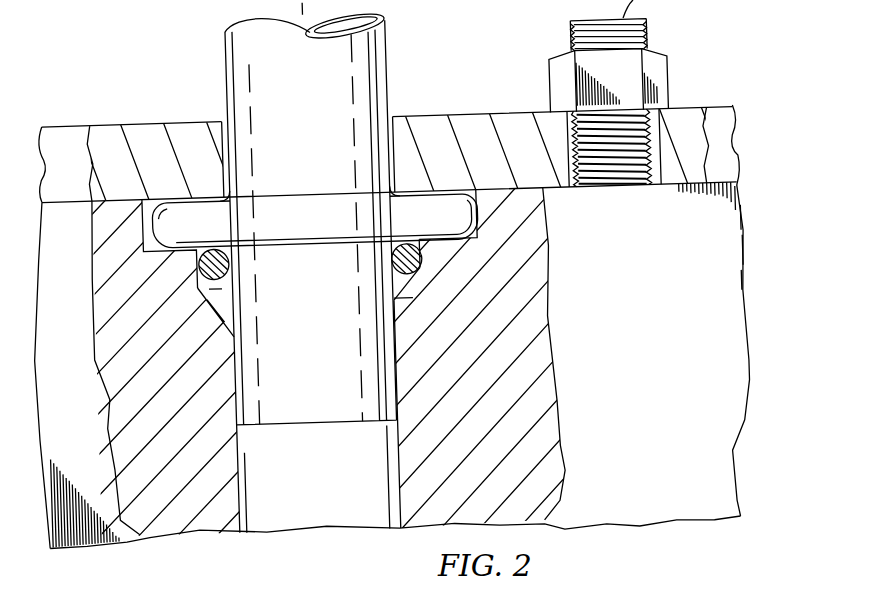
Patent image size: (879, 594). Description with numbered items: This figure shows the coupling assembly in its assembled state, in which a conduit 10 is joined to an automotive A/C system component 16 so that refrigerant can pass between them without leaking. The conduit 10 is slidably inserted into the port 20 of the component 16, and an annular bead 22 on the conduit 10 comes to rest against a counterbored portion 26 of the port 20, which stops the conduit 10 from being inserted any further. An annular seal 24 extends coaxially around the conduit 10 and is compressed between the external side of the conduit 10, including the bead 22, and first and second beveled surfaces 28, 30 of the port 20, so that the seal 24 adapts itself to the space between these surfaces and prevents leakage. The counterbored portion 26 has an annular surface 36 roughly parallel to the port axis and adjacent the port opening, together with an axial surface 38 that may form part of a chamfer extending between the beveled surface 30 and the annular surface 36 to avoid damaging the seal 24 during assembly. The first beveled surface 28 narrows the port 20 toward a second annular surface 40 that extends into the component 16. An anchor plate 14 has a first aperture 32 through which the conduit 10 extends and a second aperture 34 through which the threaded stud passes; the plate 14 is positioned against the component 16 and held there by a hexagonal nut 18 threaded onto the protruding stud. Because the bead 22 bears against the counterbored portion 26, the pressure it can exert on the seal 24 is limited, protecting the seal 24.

The conduit 10 is at (231, 57).
The anchor plate 14 is at (741, 138).
The A/C system component 16 is at (660, 371).
The hexagonal nut 18 is at (675, 73).
The port 20 is at (302, 481).
The annular bead 22 is at (308, 197).
The annular seal 24 is at (222, 245).
The counterbored portion 26 is at (141, 250).
The first beveled surface 28 is at (222, 308).
The second beveled surface 30 is at (213, 284).
The first aperture 32 is at (401, 128).
The second aperture 34 is at (665, 135).
The annular surface 36 is at (465, 204).
The axial surface 38 is at (479, 240).
The second annular surface 40 is at (388, 463).